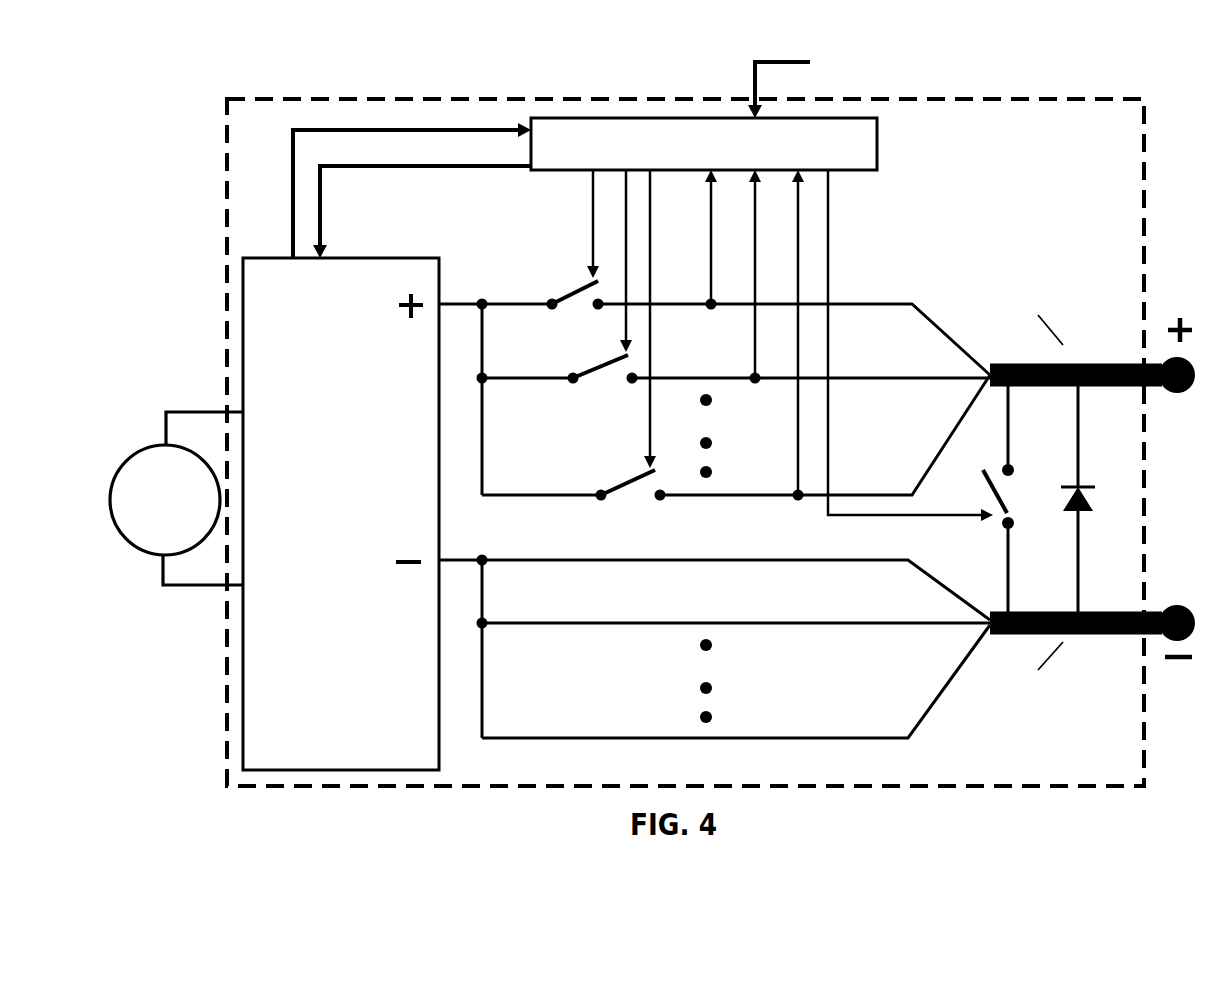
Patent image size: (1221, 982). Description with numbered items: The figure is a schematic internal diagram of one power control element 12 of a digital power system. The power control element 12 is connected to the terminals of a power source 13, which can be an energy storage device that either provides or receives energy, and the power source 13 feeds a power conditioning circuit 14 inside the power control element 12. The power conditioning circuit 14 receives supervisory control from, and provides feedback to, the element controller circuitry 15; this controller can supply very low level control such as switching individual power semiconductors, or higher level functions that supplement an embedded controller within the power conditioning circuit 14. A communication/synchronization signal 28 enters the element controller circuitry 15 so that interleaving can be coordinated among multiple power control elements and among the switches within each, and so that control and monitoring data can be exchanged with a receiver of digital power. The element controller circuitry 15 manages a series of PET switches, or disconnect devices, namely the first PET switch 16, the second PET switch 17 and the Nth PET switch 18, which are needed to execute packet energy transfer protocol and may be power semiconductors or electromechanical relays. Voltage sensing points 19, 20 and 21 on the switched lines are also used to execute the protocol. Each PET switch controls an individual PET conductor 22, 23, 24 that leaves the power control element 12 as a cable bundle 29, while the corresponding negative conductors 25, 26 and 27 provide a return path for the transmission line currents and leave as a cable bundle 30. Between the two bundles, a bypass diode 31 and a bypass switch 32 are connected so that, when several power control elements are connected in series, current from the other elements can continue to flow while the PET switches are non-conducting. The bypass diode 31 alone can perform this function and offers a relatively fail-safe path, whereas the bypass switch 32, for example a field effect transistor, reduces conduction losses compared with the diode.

The power control element 12 is at (198, 124).
The power source 13 is at (122, 455).
The power conditioning circuit 14 is at (253, 250).
The element controller circuitry 15 is at (883, 150).
The PET switch S1 16 is at (573, 298).
The PET switch S2 17 is at (608, 372).
The PET switch SN 18 is at (635, 492).
The voltage sensing point 19 is at (702, 292).
The voltage sensing point 20 is at (745, 368).
The voltage sensing point 21 is at (792, 482).
The PET conductor 22 is at (938, 313).
The PET conductor 23 is at (938, 370).
The PET conductor 24 is at (922, 458).
The negative conductor 25 is at (745, 551).
The negative conductor 26 is at (848, 615).
The negative conductor 27 is at (915, 722).
The communication/synchronization signal 28 is at (738, 75).
The cable bundle 29 is at (1130, 388).
The cable bundle 30 is at (1118, 610).
The bypass diode DB 31 is at (1090, 478).
The bypass switch SB 32 is at (1007, 493).